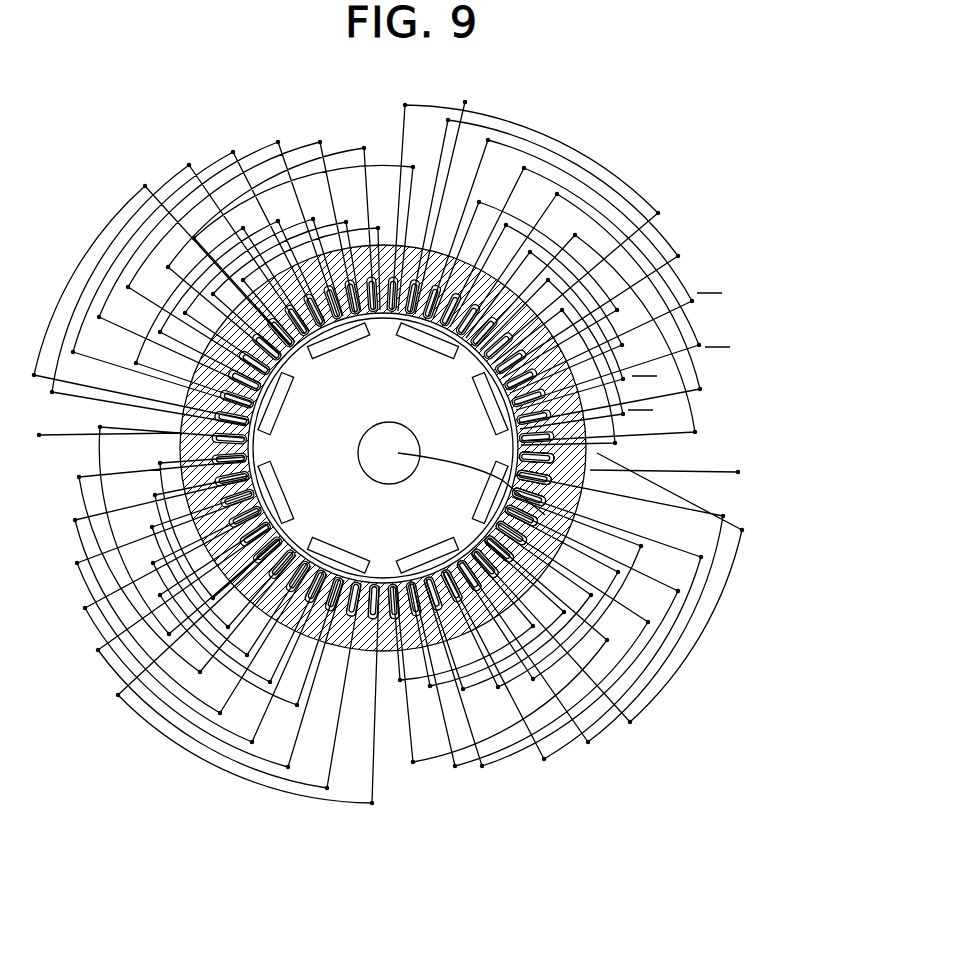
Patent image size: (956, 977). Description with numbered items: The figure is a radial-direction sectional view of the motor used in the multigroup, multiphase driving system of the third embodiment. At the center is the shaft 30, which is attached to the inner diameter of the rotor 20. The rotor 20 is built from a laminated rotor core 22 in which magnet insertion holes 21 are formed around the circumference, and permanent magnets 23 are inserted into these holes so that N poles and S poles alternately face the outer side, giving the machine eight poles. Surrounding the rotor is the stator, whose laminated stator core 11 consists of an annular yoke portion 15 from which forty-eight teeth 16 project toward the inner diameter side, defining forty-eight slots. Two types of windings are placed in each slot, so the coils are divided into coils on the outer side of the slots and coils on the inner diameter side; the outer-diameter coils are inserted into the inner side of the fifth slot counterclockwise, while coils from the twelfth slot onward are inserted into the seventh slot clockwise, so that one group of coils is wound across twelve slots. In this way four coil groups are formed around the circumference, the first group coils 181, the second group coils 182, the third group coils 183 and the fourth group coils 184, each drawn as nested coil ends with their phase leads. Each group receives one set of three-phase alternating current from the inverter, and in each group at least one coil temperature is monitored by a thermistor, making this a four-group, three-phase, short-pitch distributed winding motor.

The stator core 11 is at (792, 417).
The yoke portion 15 is at (590, 500).
The teeth 16 is at (590, 457).
The rotor 20 is at (628, 323).
The magnet insertion holes 21 is at (590, 423).
The rotor core 22 is at (590, 323).
The permanent magnets 23 is at (590, 360).
The shaft 30 is at (673, 563).
The first group coils 181 is at (608, 301).
The second group coils 182 is at (123, 208).
The third group coils 183 is at (165, 740).
The fourth group coils 184 is at (583, 609).